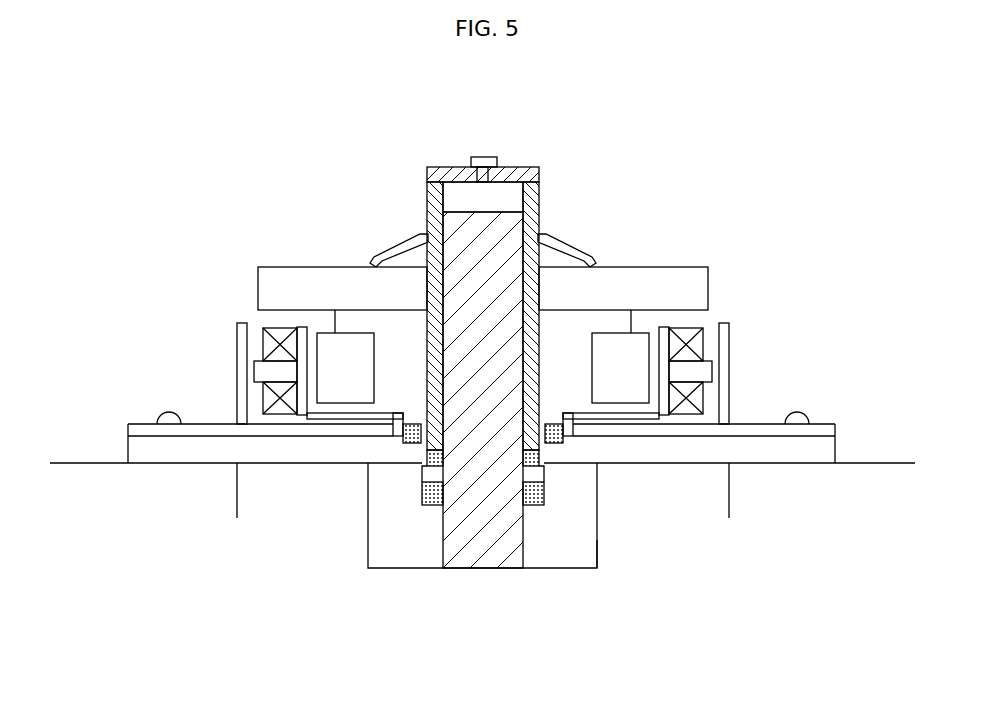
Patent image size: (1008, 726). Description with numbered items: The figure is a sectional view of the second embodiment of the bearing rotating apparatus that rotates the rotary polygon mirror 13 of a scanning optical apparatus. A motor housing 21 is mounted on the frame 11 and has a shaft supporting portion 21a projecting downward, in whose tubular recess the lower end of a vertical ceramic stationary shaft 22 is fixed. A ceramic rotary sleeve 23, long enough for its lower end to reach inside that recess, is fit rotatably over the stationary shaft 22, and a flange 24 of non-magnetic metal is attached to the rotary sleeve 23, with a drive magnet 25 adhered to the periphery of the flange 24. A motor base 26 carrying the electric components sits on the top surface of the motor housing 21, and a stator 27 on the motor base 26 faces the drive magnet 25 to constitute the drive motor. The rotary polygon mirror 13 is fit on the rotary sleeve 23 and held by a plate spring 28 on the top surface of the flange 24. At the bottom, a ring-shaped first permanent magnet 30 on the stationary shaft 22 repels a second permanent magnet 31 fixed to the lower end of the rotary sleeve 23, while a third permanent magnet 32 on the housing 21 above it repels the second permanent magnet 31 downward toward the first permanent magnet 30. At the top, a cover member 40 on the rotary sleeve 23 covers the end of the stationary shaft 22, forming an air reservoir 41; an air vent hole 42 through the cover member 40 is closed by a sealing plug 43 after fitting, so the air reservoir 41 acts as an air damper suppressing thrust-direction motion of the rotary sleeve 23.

The frame 11 is at (882, 463).
The rotary polygon mirror 13 is at (295, 278).
The motor housing 21 is at (684, 463).
The shaft supporting portion 21a is at (597, 552).
The stationary shaft 22 is at (491, 568).
The rotary sleeve 23 is at (537, 209).
The flange 24 is at (593, 322).
The drive magnet 25 is at (640, 340).
The motor base 26 is at (757, 426).
The stator 27 is at (707, 370).
The plate spring 28 is at (383, 253).
The first permanent magnet 30 is at (432, 505).
The second permanent magnet 31 is at (422, 467).
The third permanent magnet 32 is at (405, 442).
The cover member 40 is at (528, 172).
The air reservoir 41 is at (453, 188).
The air vent hole 42 is at (488, 160).
The sealing plug 43 is at (481, 172).